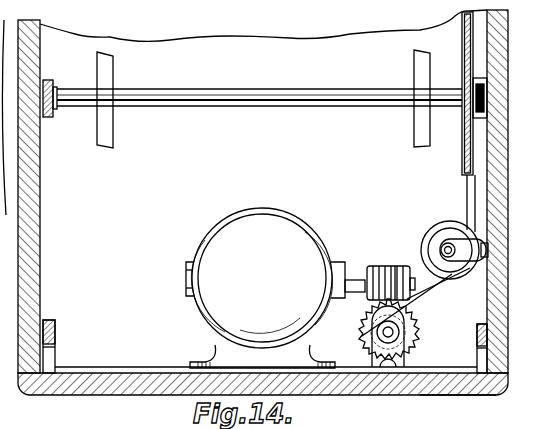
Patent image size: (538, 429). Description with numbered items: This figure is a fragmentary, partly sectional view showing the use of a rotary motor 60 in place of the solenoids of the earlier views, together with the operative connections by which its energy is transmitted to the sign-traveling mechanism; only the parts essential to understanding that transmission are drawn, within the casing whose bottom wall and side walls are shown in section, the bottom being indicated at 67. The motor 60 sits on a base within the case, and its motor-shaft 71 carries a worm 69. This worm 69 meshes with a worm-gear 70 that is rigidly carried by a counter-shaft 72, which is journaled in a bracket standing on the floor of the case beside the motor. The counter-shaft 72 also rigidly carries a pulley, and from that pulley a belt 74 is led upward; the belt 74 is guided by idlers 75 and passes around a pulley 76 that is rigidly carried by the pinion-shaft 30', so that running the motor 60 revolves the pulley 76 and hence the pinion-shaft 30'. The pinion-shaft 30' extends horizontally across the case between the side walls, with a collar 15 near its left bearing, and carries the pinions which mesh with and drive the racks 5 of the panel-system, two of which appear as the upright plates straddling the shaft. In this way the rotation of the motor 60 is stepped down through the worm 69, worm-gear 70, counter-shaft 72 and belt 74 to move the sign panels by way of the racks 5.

The rack 5 is at (110, 130).
The collar 15 is at (48, 117).
The pinion-shaft 30' is at (259, 110).
The rotary motor 60 is at (275, 278).
The casing bottom 67 is at (458, 383).
The worm 69 is at (388, 266).
The worm-gear 70 is at (408, 326).
The motor-shaft 71 is at (362, 278).
The counter-shaft 72 is at (400, 340).
The belt 74 is at (466, 192).
The idler 75 is at (430, 222).
The pulley 76 is at (460, 150).